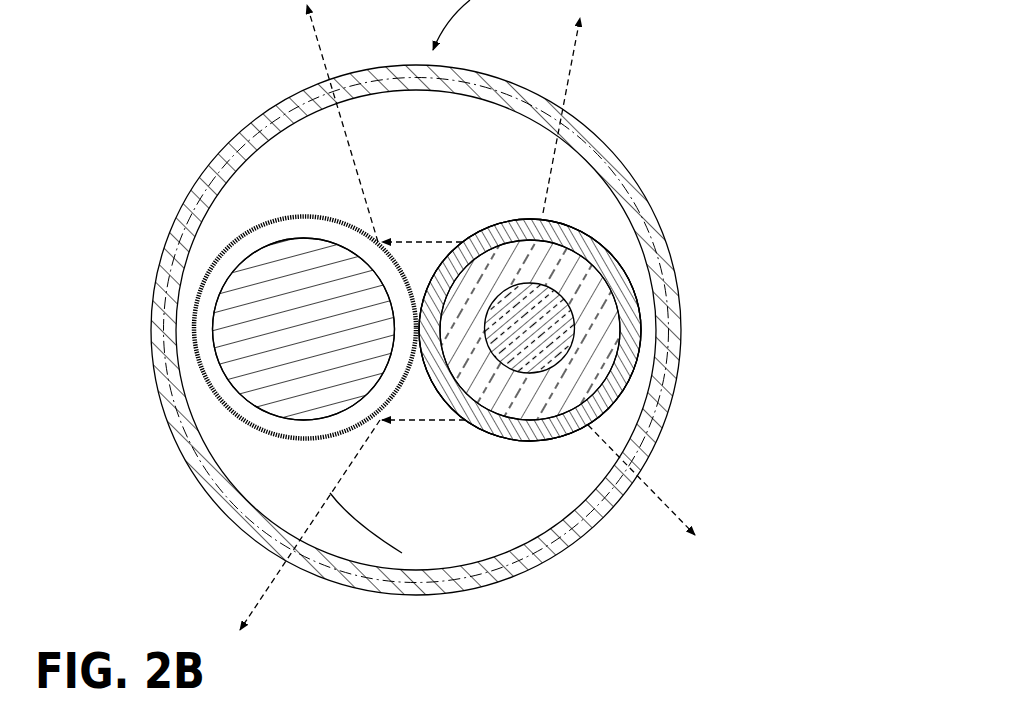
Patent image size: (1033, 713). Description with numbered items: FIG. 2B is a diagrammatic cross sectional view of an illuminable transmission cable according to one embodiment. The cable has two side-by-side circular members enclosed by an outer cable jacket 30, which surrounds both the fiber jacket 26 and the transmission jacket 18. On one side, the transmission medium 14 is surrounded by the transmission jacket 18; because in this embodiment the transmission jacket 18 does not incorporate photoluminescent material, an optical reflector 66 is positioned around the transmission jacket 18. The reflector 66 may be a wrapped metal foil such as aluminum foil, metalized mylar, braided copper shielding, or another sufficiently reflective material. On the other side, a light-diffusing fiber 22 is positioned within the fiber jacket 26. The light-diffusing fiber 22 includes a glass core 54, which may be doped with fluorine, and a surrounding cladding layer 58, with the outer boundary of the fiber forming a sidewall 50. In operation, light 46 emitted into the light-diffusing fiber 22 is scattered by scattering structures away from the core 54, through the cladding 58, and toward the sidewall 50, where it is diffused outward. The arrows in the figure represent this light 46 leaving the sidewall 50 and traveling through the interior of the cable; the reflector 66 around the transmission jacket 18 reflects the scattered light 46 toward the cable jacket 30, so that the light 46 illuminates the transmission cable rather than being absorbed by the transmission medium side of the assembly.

The transmission medium 14 is at (252, 376).
The transmission jacket 18 is at (210, 315).
The light-diffusing fiber 22 is at (628, 331).
The fiber jacket 26 is at (583, 230).
The cable jacket 30 is at (583, 147).
The light 46 is at (327, 68).
The sidewall 50 is at (608, 403).
The glass core 54 is at (545, 340).
The cladding layer 58 is at (612, 276).
The optical reflector 66 is at (237, 420).